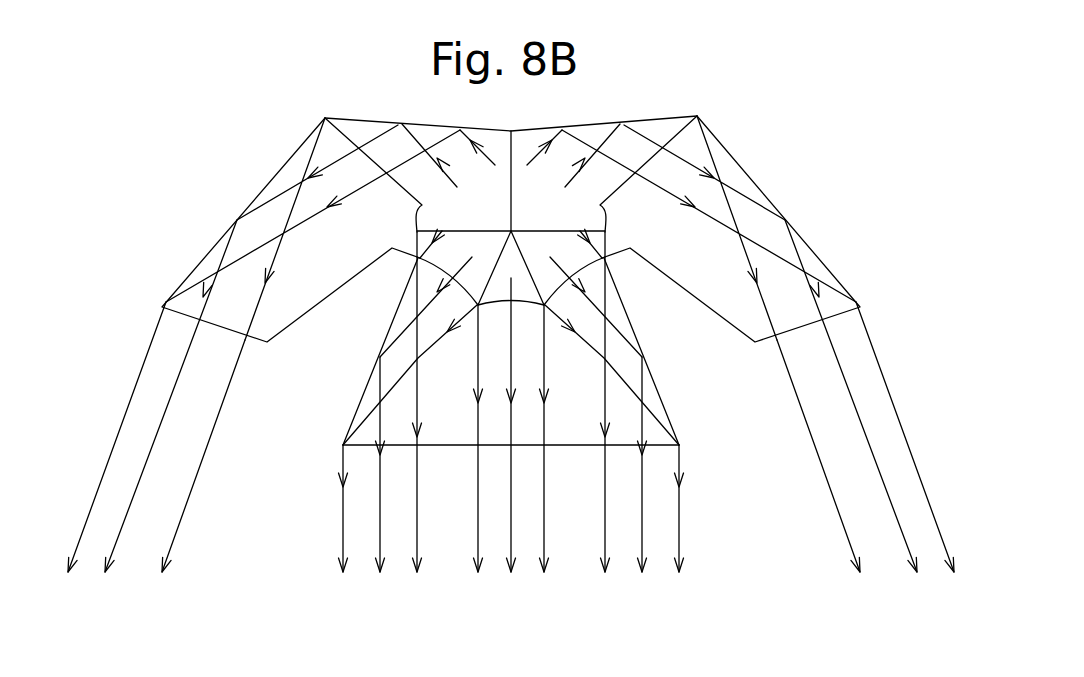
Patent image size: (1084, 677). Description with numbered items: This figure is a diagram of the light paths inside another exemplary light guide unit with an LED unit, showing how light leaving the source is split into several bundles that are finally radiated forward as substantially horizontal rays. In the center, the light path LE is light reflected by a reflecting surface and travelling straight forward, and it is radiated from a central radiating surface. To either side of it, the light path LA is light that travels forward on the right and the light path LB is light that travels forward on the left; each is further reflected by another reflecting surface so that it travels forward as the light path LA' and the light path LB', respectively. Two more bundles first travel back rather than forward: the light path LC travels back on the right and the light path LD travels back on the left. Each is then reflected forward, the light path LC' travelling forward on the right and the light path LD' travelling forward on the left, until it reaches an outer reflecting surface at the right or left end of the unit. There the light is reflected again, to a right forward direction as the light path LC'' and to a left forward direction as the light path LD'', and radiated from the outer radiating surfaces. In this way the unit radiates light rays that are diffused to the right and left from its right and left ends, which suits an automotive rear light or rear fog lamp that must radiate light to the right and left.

The light path LA is at (619, 351).
The light path LB is at (405, 351).
The light path LC is at (573, 191).
The light path LD is at (448, 191).
The light path LE is at (478, 522).
The light path LA' is at (646, 501).
The light path LB' is at (376, 501).
The light path LC' is at (709, 228).
The light path LD' is at (313, 229).
The light path LC" LC'' is at (867, 434).
The light path LD" LD'' is at (154, 434).